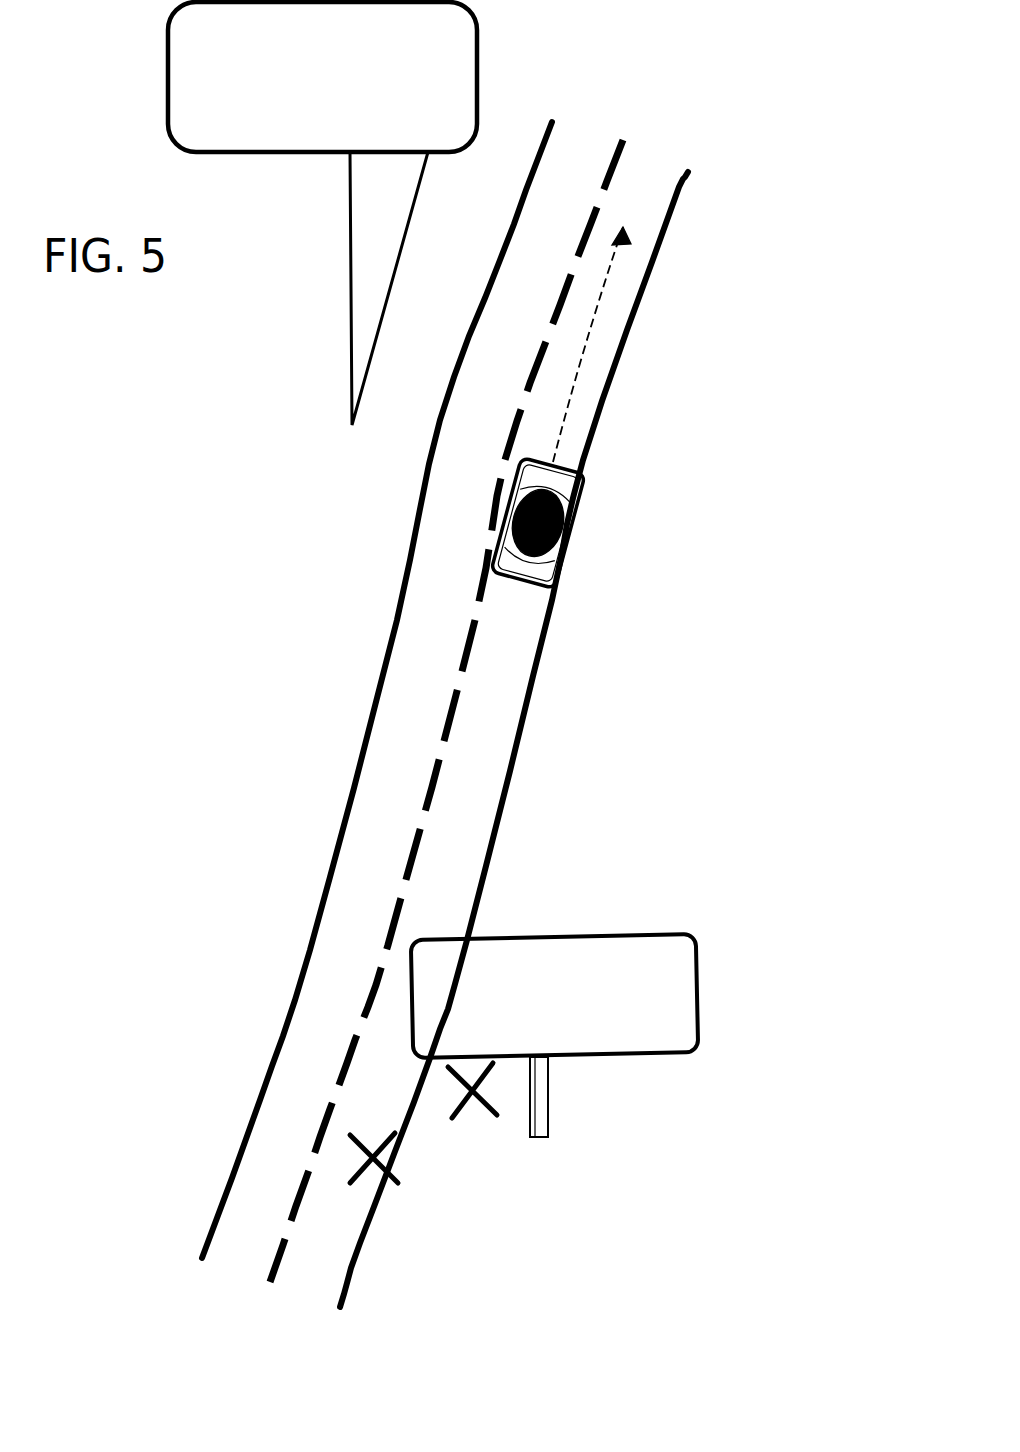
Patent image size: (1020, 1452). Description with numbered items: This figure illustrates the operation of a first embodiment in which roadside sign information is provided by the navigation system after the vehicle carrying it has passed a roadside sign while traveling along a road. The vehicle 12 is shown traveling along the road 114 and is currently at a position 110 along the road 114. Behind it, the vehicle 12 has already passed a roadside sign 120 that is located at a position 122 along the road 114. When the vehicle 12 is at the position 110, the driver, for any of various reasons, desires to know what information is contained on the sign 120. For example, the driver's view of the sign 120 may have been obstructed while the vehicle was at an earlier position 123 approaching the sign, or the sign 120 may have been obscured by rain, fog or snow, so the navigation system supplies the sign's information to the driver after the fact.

The vehicle 12 is at (590, 487).
The position 110 is at (517, 495).
The road 114 is at (207, 1217).
The roadside sign 120 is at (700, 930).
The position 122 is at (498, 1123).
The position 123 is at (400, 1192).